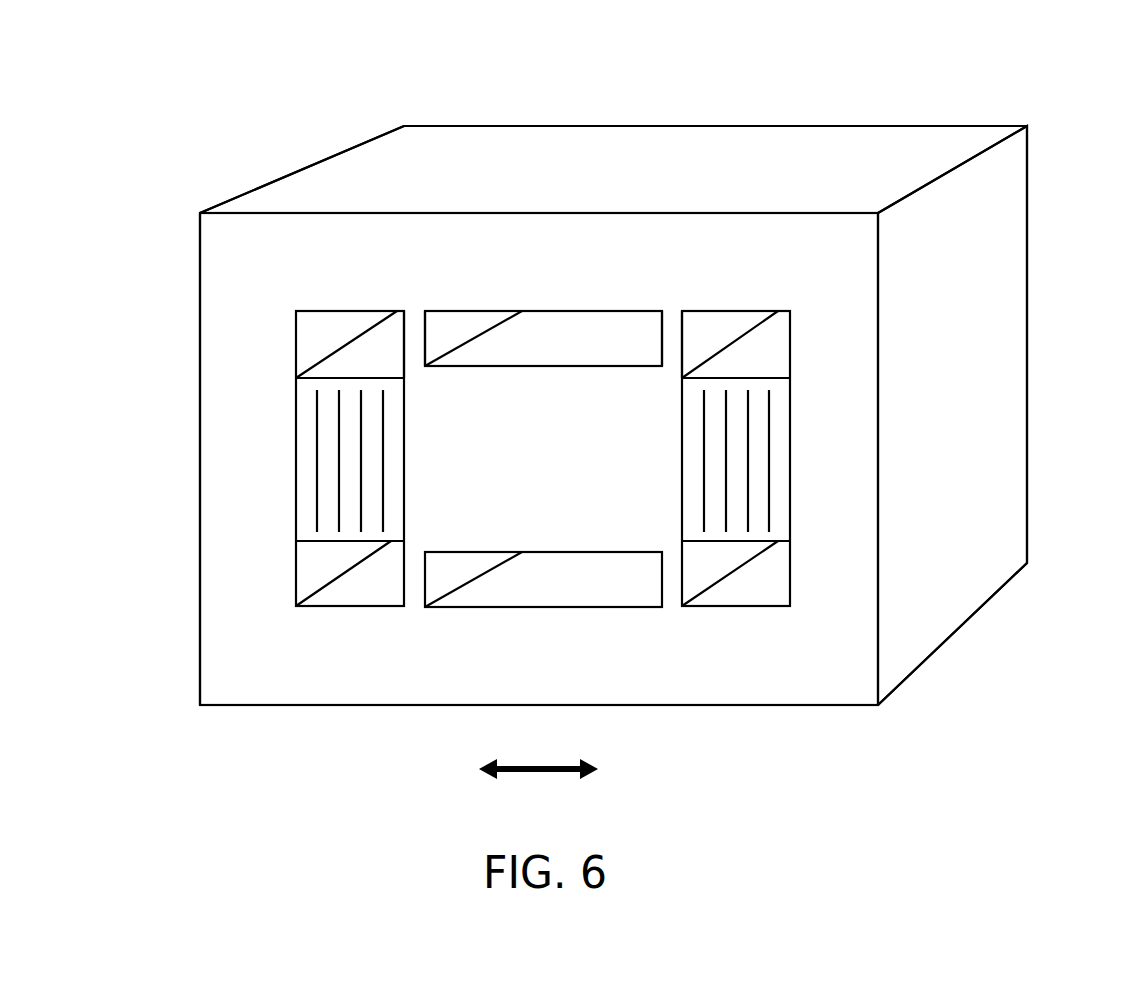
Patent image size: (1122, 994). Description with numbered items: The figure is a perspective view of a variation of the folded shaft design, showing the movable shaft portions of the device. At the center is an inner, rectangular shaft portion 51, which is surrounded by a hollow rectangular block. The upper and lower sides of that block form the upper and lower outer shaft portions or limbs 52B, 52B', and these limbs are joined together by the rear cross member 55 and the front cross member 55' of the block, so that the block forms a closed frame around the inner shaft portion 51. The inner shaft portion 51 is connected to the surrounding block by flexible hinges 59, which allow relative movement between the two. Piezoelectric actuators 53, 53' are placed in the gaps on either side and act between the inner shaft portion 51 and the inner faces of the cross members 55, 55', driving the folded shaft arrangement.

The inner rectangular shaft portion 51 is at (575, 475).
The upper outer shaft portion 52B is at (539, 204).
The lower outer shaft portion 52B' is at (459, 677).
The piezoelectric actuator 53 is at (232, 458).
The piezoelectric actuator 53' is at (895, 476).
The rear cross member 55 is at (232, 415).
The front cross member 55' is at (975, 415).
The flexible hinge 59 is at (415, 343).